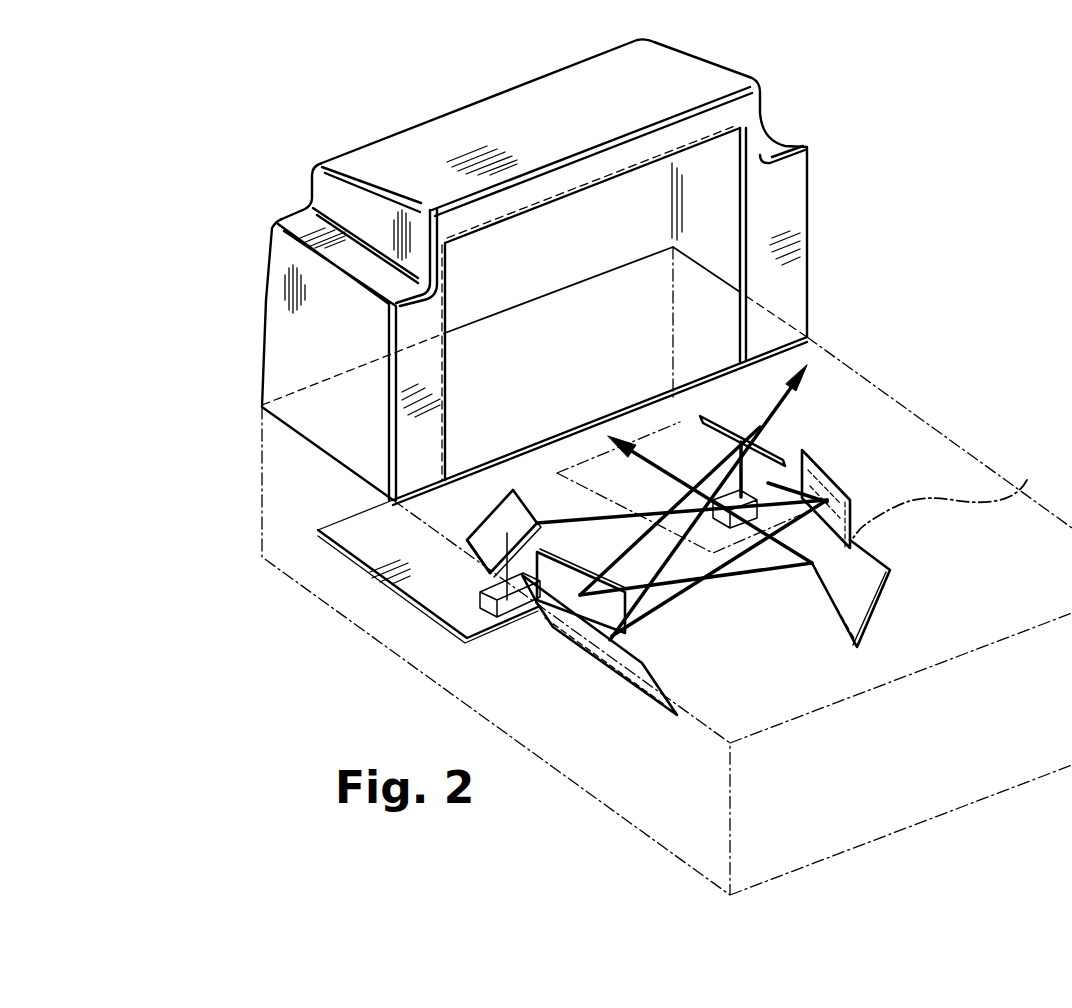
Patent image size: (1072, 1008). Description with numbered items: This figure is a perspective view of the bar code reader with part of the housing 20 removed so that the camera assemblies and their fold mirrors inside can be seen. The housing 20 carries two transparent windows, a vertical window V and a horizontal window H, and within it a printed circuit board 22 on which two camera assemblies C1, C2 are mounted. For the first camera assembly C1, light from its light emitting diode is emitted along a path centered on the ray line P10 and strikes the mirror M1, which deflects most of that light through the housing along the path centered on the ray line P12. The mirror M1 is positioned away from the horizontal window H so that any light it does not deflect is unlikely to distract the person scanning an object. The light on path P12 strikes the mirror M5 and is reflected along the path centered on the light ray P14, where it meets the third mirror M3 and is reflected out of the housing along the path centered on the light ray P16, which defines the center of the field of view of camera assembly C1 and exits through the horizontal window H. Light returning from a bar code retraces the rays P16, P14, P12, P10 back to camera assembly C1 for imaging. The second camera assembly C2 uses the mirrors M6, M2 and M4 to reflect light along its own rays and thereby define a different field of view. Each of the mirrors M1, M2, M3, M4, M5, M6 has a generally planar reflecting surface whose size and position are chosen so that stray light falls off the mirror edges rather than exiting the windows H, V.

The housing 20 is at (770, 224).
The vertical window V is at (712, 198).
The printed circuit board 22 is at (430, 582).
The mirror M1 is at (510, 518).
The mirror M2 is at (590, 607).
The third mirror M3 is at (627, 667).
The mirror M4 is at (857, 593).
The mirror M5 is at (840, 480).
The mirror M6 is at (762, 364).
The camera assembly C1 is at (510, 607).
The camera assembly C2 is at (763, 445).
The ray line P10 is at (490, 540).
The ray line P12 is at (573, 523).
The light ray P14 is at (673, 603).
The light ray P16 is at (710, 483).
The horizontal window H is at (949, 500).